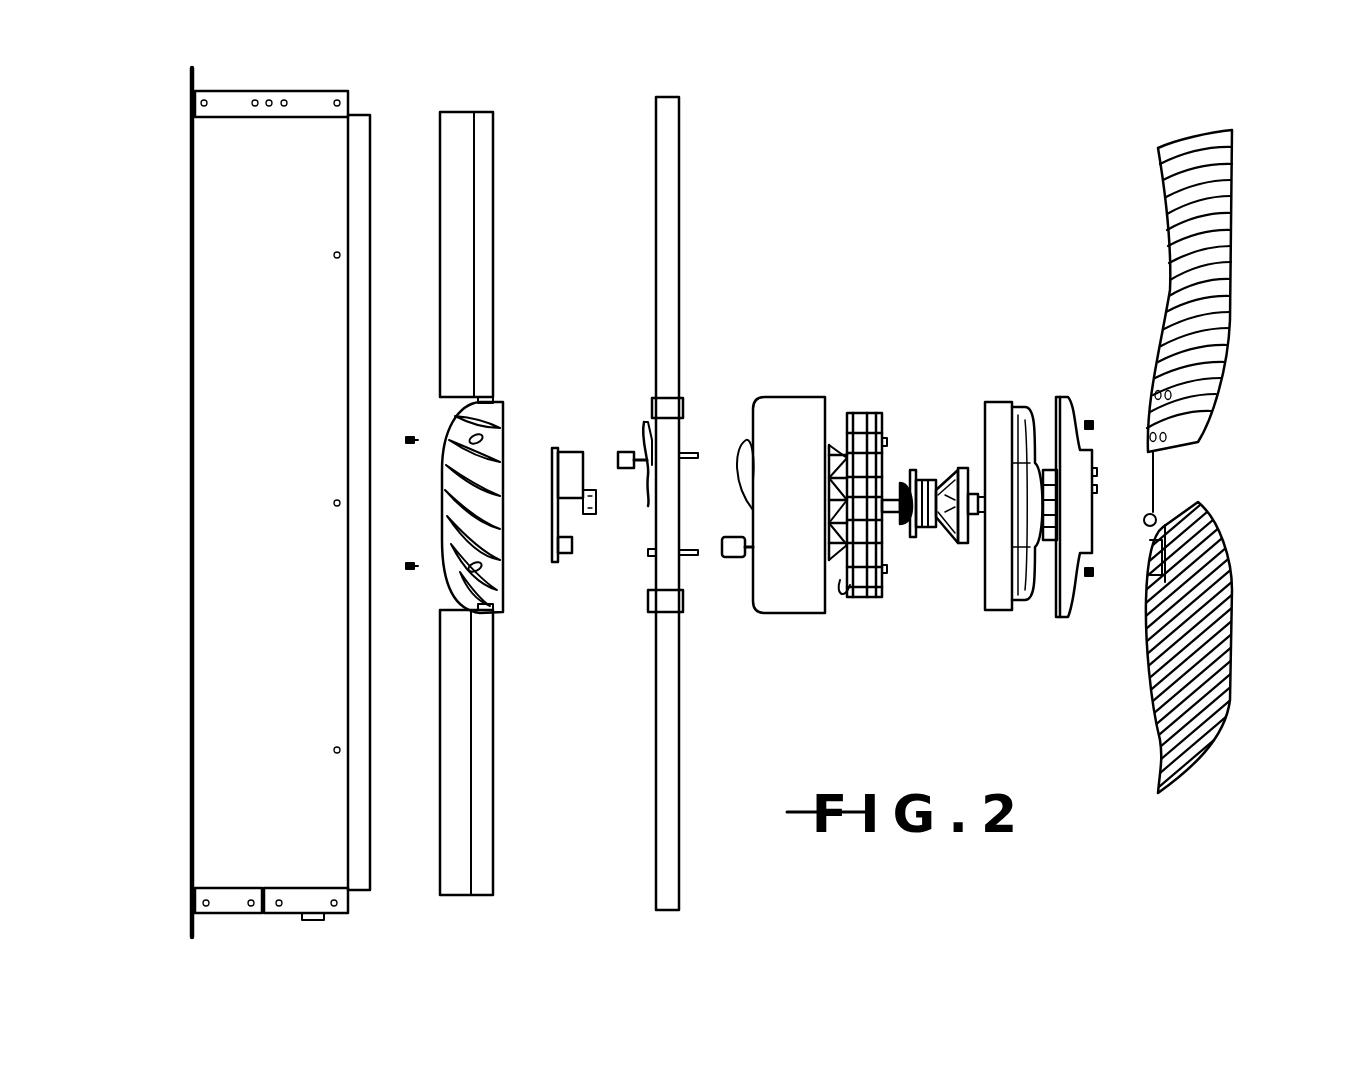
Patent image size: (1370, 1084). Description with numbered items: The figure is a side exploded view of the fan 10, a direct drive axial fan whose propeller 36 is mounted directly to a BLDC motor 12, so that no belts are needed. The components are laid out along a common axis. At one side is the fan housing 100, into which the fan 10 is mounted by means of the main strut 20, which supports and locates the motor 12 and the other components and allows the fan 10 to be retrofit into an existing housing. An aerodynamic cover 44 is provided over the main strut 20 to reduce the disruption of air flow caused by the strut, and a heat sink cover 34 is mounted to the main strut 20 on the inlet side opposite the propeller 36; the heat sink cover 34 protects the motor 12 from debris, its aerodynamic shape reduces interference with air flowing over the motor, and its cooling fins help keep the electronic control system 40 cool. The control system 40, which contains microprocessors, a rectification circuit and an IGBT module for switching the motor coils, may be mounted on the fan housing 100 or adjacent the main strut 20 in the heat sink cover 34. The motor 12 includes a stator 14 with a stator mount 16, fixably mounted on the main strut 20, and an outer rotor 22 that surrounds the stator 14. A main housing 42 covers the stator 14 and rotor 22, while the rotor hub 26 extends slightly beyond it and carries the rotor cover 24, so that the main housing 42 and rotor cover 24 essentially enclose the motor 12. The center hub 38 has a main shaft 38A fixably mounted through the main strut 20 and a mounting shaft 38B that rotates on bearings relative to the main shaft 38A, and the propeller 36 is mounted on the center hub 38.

The fan 10 is at (905, 185).
The BLDC motor 12 is at (1082, 372).
The stator 14 is at (870, 598).
The stator mount 16 is at (843, 450).
The main strut 20 is at (680, 229).
The rotor 22 is at (1003, 410).
The rotor cover 24 is at (1070, 413).
The rotor hub 26 is at (1032, 590).
The heat sink cover 34 is at (443, 490).
The propeller 36 is at (1225, 250).
The center hub 38 is at (933, 489).
The main shaft 38A is at (905, 490).
The mounting shaft 38B is at (978, 513).
The electronic control system 40 is at (568, 452).
The main housing 42 is at (776, 597).
The aerodynamic cover 44 is at (449, 237).
The fan housing 100 is at (302, 103).